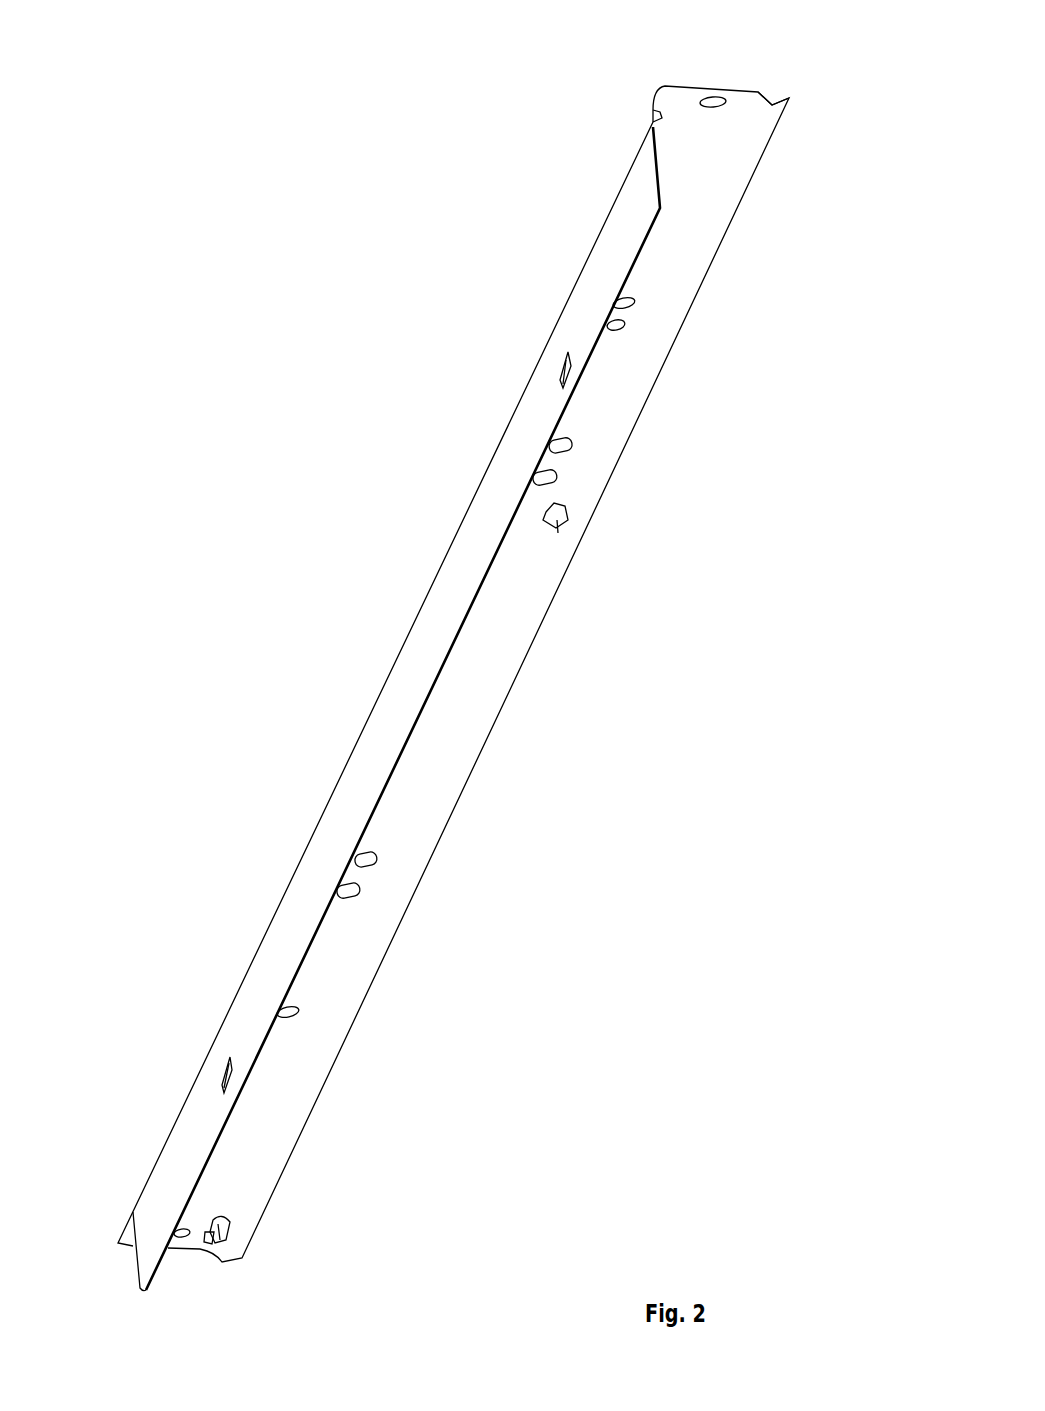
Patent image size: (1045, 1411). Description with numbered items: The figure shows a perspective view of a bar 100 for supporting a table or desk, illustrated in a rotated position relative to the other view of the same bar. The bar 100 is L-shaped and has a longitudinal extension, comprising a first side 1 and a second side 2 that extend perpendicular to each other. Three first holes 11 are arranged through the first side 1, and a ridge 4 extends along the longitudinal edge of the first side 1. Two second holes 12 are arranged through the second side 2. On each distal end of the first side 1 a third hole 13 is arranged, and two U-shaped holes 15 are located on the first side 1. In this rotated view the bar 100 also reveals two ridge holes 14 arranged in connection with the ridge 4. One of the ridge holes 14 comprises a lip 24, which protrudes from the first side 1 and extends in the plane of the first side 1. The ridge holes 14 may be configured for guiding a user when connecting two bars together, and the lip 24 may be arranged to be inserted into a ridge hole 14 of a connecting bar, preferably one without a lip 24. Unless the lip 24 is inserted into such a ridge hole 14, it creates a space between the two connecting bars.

The bar 100 is at (143, 546).
The first side 1 is at (442, 727).
The second side 2 is at (360, 770).
The ridge 4 is at (771, 104).
The first holes 11 is at (636, 302).
The second holes 12 is at (565, 380).
The third hole 13 is at (700, 103).
The ridge holes 14 is at (555, 523).
The U-shaped holes 15 is at (572, 446).
The lip 24 is at (210, 1237).